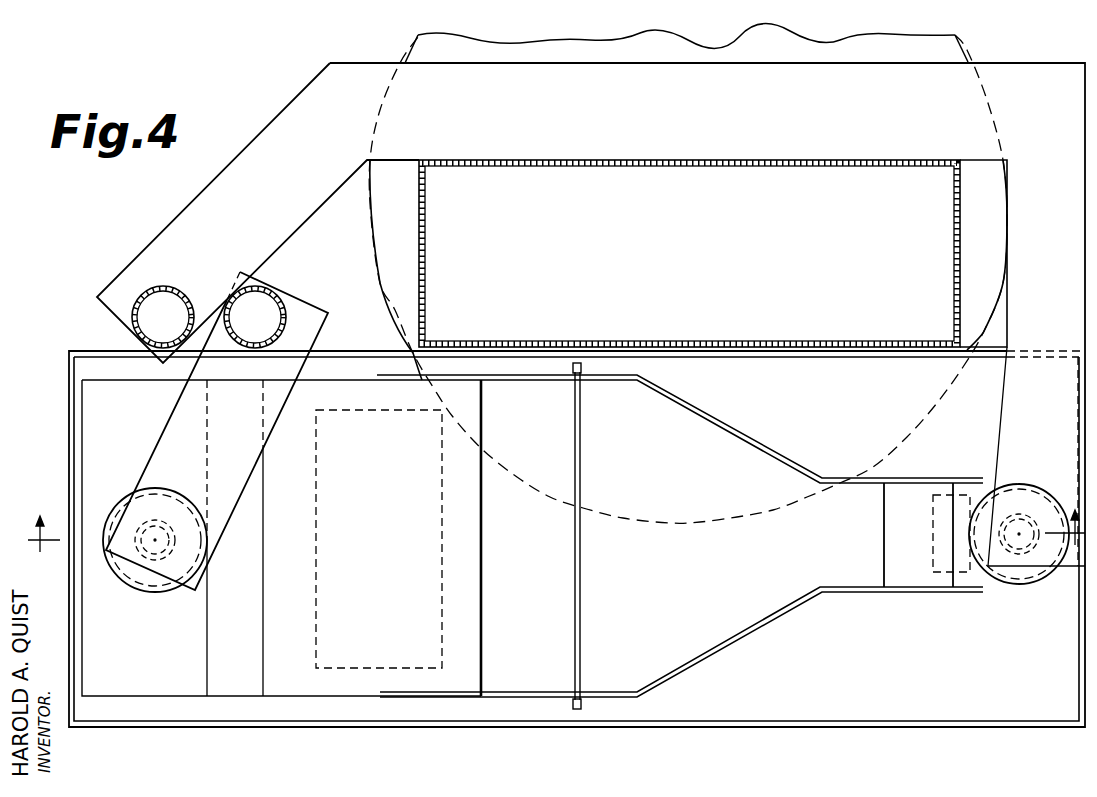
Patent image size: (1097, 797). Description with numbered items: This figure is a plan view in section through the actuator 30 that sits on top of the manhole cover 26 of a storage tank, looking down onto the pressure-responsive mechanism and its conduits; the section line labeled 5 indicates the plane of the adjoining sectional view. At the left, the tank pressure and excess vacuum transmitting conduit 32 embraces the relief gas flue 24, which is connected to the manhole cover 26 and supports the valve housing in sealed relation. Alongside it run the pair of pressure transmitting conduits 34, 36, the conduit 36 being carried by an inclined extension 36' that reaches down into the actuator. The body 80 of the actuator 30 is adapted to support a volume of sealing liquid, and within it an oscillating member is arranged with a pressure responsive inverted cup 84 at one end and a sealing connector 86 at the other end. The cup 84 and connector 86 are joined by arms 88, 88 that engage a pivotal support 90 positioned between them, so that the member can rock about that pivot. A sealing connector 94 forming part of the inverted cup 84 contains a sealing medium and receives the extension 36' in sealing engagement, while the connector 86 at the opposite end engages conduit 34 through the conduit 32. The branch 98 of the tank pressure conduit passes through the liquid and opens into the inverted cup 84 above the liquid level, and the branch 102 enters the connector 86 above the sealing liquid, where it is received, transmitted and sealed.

The relief gas flue 24 is at (714, 292).
The manhole cover 26 is at (968, 50).
The actuator 30 is at (62, 425).
The tank pressure and excess vacuum transmitting conduit 32 is at (190, 215).
The pressure transmitting conduit 34 is at (130, 316).
The pressure transmitting conduit 36 is at (277, 305).
The extension of conduit 36 36' is at (214, 431).
The body of the actuator 80 is at (68, 462).
The pressure responsive inverted cup 84 is at (483, 572).
The sealing connector 86 is at (1028, 581).
The arms 88 is at (700, 415).
The pivotal support 90 is at (581, 372).
The sealing connector 94 is at (155, 593).
The branch of the conduit 92 98 is at (443, 618).
The branch of the conduit 92 102 is at (950, 563).
The section line 5 is at (556, 519).